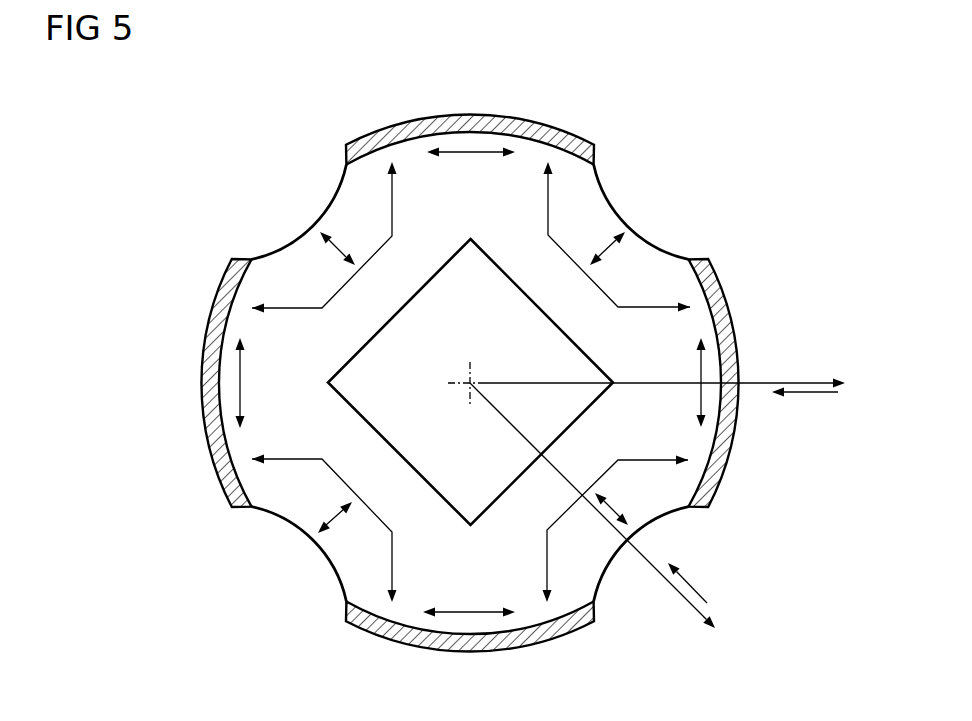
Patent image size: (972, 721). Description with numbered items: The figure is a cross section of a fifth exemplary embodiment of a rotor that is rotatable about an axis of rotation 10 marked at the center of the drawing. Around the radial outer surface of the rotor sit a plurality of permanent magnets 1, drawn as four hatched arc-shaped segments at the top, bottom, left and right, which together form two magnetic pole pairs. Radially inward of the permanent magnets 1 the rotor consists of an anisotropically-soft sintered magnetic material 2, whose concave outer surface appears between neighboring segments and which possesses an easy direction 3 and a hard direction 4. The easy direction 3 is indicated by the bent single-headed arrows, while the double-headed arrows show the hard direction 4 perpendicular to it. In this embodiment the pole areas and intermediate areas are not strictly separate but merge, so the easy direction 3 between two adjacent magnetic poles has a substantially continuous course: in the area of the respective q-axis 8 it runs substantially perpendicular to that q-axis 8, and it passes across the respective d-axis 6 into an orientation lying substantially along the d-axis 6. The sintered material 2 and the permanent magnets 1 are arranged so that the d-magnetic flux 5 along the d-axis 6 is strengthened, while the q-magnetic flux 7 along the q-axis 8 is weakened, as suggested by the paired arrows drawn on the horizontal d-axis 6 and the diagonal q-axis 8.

The permanent magnets 1 is at (533, 115).
The anisotropically-soft sintered magnetic material 2 is at (600, 208).
The easy direction 3 is at (300, 309).
The hard direction 4 is at (470, 158).
The d-magnetic flux 5 is at (813, 396).
The d-axis 6 is at (813, 379).
The q-magnetic flux 7 is at (693, 588).
The q-axis 8 is at (678, 598).
The axis of rotation 10 is at (470, 383).